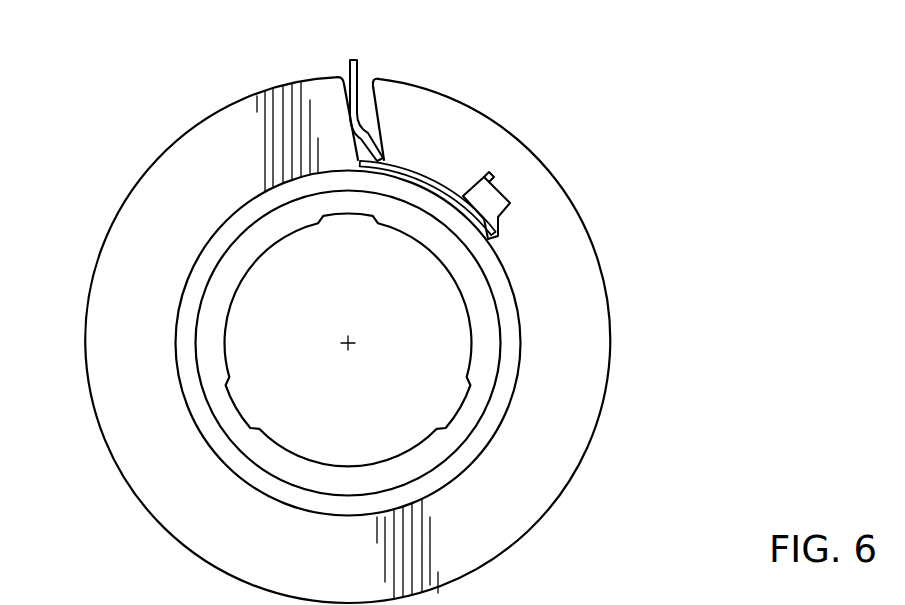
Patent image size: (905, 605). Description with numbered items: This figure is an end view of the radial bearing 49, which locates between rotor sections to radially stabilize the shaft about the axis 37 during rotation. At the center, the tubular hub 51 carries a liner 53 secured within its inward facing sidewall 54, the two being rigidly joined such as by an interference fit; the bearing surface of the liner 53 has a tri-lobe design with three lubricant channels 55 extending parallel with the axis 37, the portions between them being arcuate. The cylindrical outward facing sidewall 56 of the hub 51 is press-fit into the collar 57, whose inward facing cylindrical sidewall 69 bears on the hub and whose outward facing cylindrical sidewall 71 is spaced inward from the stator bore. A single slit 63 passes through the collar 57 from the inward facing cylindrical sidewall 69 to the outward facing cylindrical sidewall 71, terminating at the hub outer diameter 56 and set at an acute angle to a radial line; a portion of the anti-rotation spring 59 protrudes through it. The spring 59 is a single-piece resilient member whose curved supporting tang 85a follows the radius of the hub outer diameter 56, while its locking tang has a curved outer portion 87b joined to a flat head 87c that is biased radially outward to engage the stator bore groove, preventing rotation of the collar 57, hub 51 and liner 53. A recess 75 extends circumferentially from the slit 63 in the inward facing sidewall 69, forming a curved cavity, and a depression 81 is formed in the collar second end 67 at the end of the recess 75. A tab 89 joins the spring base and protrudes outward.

The axis 37 is at (345, 350).
The radial bearing 49 is at (683, 261).
The tubular hub 51 is at (514, 360).
The liner 53 is at (410, 450).
The inward facing sidewall 54 is at (482, 428).
The lubricant channels 55 is at (464, 408).
The outward facing sidewall 56 is at (518, 398).
The collar 57 is at (569, 532).
The anti-rotation spring 59 is at (358, 60).
The slit 63 is at (372, 153).
The second end 67 is at (556, 470).
The inward facing cylindrical sidewall 69 is at (190, 297).
The outward facing cylindrical sidewall 71 is at (95, 391).
The recess 75 is at (443, 186).
The depression 81 is at (497, 206).
The supporting tang 85a is at (437, 200).
The curved outer portion 87b is at (358, 116).
The head 87c is at (349, 68).
The tab 89 is at (492, 185).